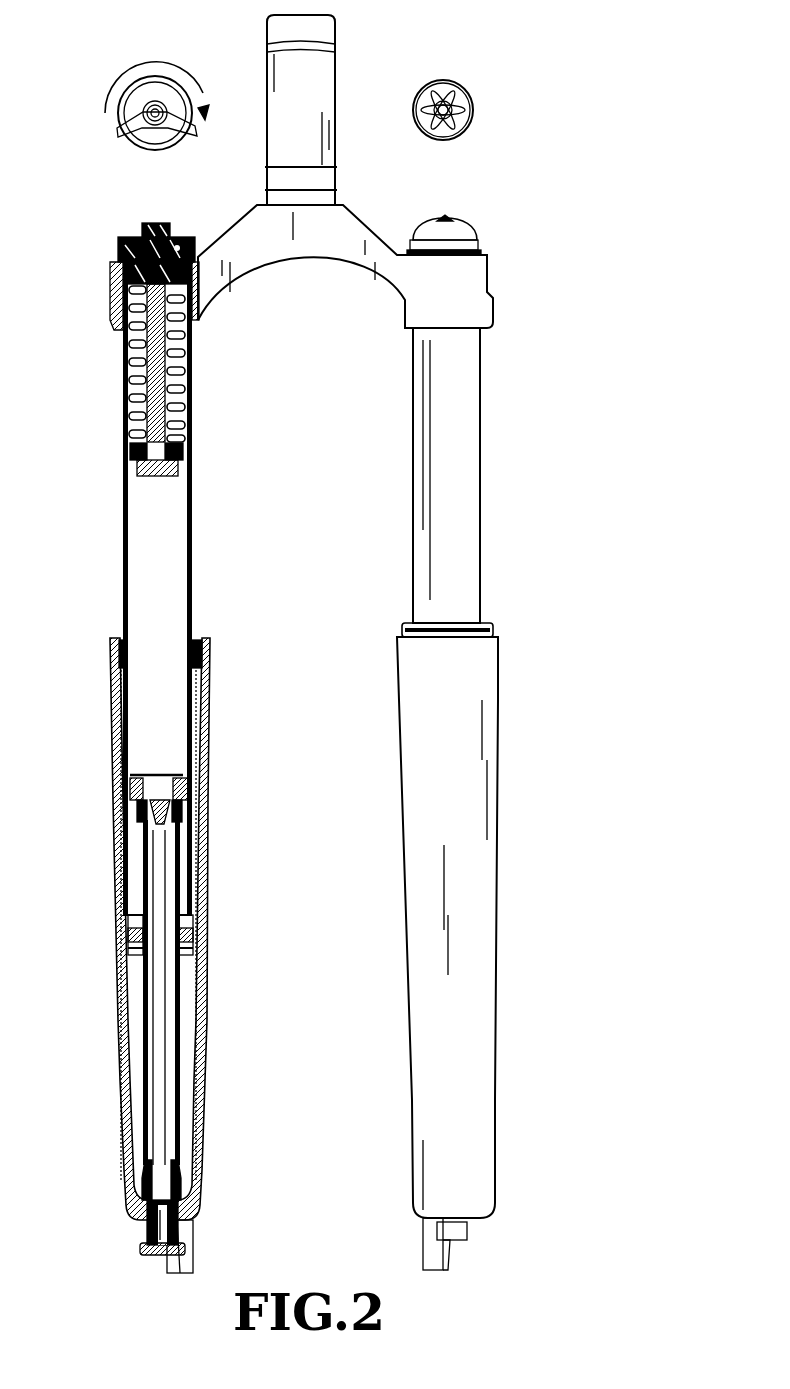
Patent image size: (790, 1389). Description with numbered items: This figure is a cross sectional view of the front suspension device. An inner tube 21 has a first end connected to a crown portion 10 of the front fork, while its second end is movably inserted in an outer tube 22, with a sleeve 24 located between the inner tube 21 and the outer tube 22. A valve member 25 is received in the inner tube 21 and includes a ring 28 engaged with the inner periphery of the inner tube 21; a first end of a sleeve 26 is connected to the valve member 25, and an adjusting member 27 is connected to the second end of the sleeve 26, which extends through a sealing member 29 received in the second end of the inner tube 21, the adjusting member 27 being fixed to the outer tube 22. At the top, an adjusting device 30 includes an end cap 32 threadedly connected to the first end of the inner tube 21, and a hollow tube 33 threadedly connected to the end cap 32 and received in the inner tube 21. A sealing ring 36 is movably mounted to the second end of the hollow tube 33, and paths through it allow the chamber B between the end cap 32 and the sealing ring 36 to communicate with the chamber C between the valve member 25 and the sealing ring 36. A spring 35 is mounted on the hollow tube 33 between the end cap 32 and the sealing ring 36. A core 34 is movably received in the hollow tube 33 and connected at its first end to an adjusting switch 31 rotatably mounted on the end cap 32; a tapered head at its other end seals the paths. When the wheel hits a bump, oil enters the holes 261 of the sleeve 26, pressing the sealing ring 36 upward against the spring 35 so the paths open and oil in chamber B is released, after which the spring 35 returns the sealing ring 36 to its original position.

The crown portion 10 is at (372, 248).
The inner tube 21 is at (195, 508).
The outer tube 22 is at (200, 775).
The sleeve 24 is at (200, 710).
The valve member 25 is at (150, 762).
The sleeve 26 is at (180, 1122).
The holes 261 is at (180, 1178).
The adjusting member 27 is at (140, 1243).
The ring 28 is at (120, 800).
The sealing member 29 is at (122, 940).
The adjusting device 30 is at (130, 228).
The adjusting switch 31 is at (175, 236).
The end cap 32 is at (118, 278).
The hollow tube 33 is at (127, 345).
The core 34 is at (127, 420).
The spring 35 is at (196, 325).
The sealing ring 36 is at (185, 447).
The chamber B is at (178, 378).
The chamber C is at (165, 592).